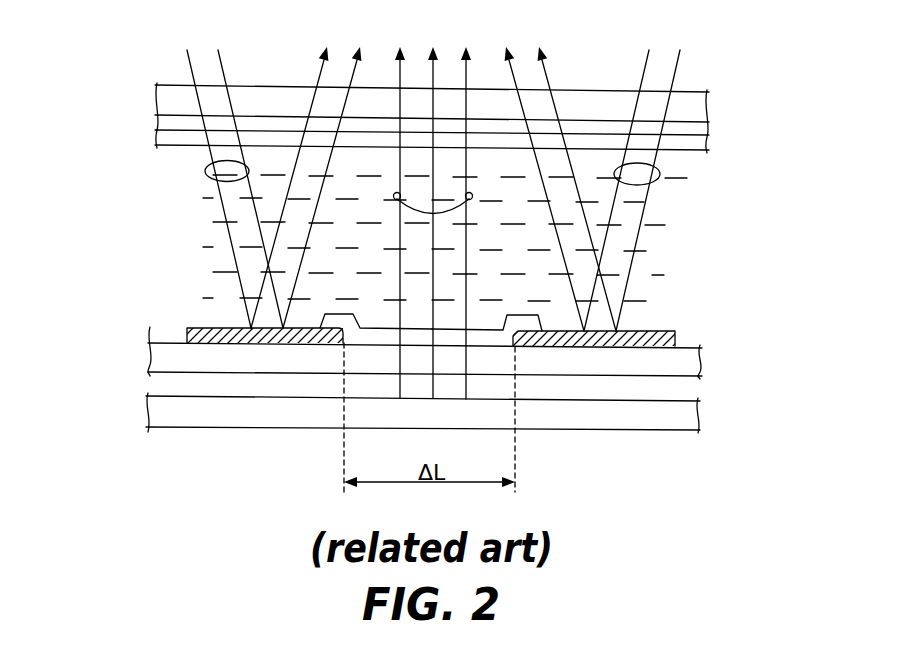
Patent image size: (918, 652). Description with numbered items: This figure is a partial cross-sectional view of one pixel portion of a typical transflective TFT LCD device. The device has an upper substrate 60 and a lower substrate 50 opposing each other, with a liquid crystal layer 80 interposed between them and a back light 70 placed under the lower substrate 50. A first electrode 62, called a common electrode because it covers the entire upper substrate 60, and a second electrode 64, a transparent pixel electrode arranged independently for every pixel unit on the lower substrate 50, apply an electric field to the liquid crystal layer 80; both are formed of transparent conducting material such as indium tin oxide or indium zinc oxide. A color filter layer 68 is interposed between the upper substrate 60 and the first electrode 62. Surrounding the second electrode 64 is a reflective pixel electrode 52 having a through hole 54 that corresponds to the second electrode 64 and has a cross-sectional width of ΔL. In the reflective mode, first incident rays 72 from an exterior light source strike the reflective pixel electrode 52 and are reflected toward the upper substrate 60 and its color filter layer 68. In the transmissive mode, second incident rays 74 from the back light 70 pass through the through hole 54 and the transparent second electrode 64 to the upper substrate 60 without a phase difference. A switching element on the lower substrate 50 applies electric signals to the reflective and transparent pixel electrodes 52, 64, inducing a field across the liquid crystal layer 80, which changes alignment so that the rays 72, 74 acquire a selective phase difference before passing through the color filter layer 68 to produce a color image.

The lower substrate 50 is at (680, 364).
The reflective pixel electrode 52 is at (187, 328).
The through hole 54 is at (507, 347).
The upper substrate 60 is at (702, 102).
The first electrode 62 is at (708, 143).
The second electrode 64 is at (360, 337).
The color filter layer 68 is at (708, 132).
The back light 70 is at (698, 420).
The first incident rays 72 is at (206, 169).
The second incident rays 74 is at (470, 202).
The liquid crystal layer 80 is at (166, 252).